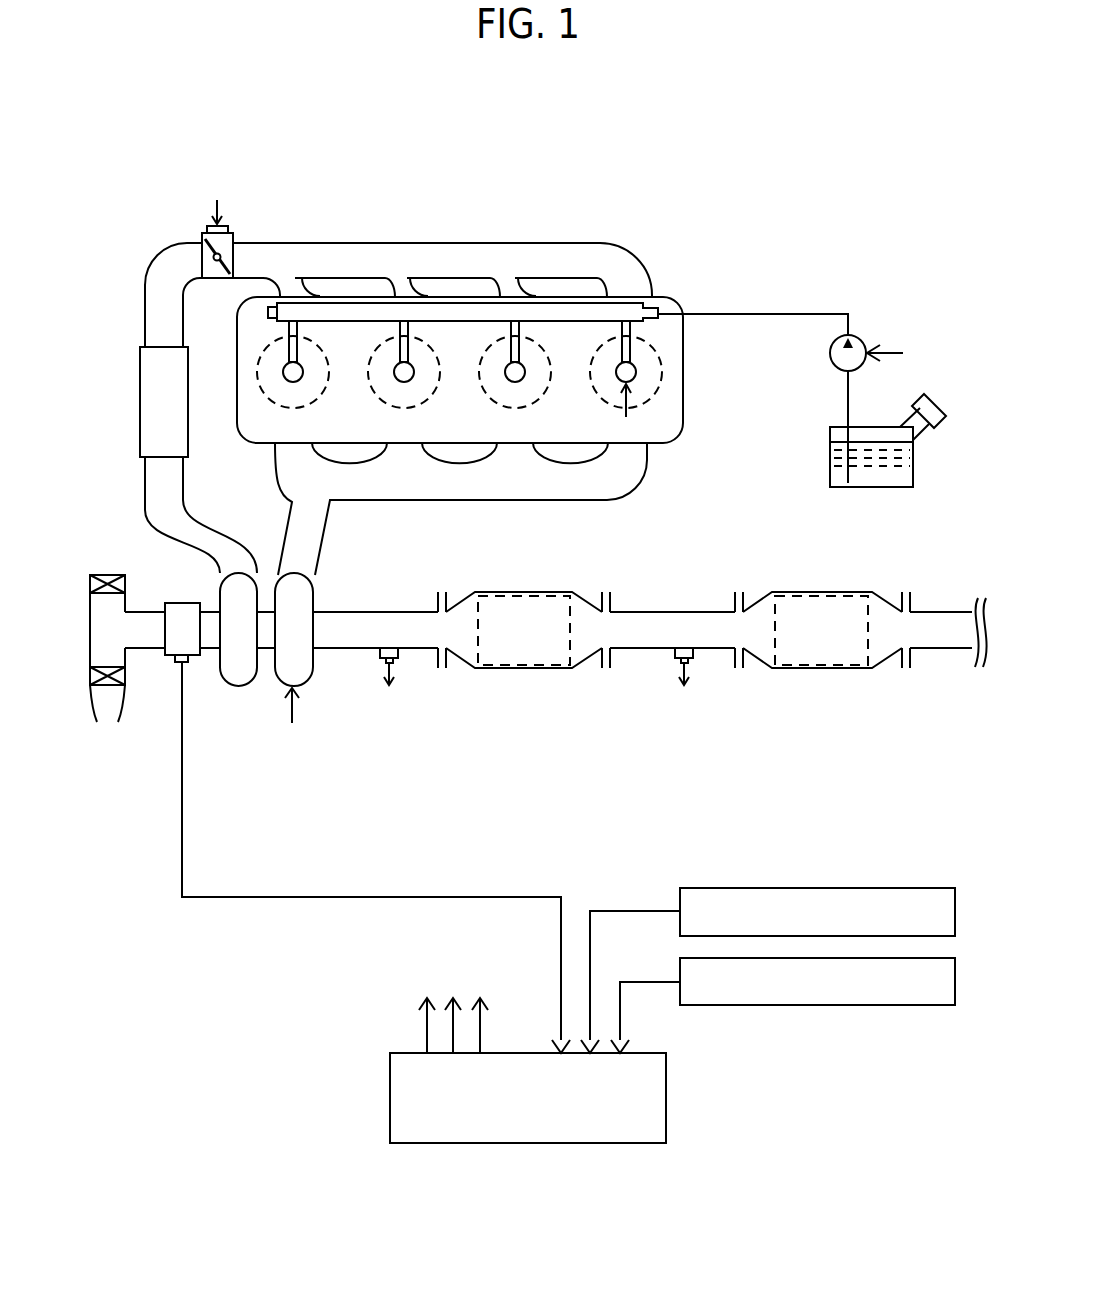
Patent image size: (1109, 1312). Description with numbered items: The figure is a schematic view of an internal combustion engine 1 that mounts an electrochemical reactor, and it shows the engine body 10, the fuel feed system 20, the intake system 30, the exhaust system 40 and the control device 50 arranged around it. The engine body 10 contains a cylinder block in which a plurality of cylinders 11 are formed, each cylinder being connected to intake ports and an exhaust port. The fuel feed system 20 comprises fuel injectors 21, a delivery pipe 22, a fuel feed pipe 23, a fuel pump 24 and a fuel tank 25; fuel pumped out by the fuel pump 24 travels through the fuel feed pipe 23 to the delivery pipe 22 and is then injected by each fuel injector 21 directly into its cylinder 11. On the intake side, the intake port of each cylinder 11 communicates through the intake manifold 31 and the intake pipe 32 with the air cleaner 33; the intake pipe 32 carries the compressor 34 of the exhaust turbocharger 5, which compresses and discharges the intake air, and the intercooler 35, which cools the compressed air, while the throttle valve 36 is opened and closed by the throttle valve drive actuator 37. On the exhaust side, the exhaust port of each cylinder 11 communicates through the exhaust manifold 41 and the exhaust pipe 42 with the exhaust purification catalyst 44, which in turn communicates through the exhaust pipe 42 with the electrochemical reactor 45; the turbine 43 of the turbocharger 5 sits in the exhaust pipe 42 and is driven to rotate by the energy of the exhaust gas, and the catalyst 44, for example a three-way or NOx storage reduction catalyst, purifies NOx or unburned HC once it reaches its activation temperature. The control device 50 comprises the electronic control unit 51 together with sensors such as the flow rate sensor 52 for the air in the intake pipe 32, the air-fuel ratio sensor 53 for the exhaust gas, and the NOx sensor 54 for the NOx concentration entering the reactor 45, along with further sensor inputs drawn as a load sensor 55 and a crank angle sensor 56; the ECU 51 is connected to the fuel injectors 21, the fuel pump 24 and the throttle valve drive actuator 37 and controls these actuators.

The internal combustion engine 1 is at (874, 137).
The exhaust turbocharger 5 is at (341, 745).
The engine body 10 is at (670, 298).
The cylinder 11 is at (655, 400).
The fuel feed system 20 is at (821, 295).
The fuel injector 21 is at (616, 378).
The delivery pipe 22 is at (618, 303).
The fuel feed pipe 23 is at (758, 314).
The fuel pump 24 is at (862, 336).
The fuel tank 25 is at (868, 487).
The intake system 30 is at (98, 297).
The intake manifold 31 is at (520, 243).
The intake pipe 32 is at (140, 612).
The air cleaner 33 is at (127, 675).
The compressor 34 is at (243, 675).
The intercooler 35 is at (140, 385).
The throttle valve 36 is at (233, 240).
The throttle valve drive actuator 37 is at (202, 238).
The exhaust system 40 is at (580, 531).
The exhaust manifold 41 is at (438, 502).
The exhaust pipe 42 is at (364, 612).
The turbine 43 is at (303, 675).
The exhaust purification catalyst 44 is at (502, 667).
The electrochemical reactor 45 is at (822, 667).
The control device 50 is at (658, 1180).
The electronic control unit 51 is at (412, 1053).
The flow rate sensor 52 is at (182, 603).
The air-fuel ratio sensor 53 is at (398, 656).
The NOx sensor 54 is at (693, 656).
The load sensor 55 is at (881, 888).
The crank angle sensor 56 is at (905, 1005).